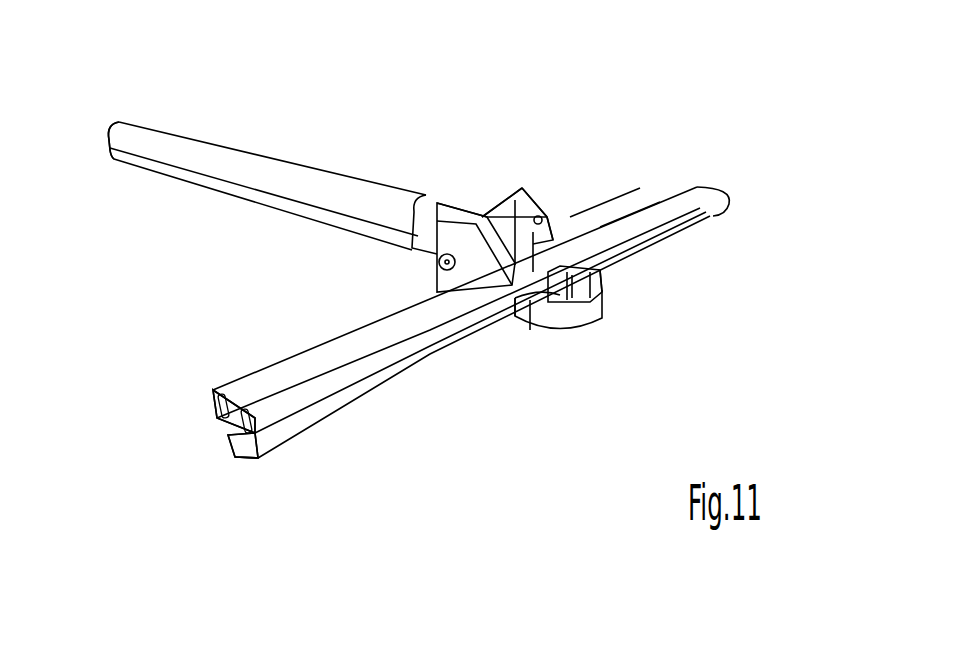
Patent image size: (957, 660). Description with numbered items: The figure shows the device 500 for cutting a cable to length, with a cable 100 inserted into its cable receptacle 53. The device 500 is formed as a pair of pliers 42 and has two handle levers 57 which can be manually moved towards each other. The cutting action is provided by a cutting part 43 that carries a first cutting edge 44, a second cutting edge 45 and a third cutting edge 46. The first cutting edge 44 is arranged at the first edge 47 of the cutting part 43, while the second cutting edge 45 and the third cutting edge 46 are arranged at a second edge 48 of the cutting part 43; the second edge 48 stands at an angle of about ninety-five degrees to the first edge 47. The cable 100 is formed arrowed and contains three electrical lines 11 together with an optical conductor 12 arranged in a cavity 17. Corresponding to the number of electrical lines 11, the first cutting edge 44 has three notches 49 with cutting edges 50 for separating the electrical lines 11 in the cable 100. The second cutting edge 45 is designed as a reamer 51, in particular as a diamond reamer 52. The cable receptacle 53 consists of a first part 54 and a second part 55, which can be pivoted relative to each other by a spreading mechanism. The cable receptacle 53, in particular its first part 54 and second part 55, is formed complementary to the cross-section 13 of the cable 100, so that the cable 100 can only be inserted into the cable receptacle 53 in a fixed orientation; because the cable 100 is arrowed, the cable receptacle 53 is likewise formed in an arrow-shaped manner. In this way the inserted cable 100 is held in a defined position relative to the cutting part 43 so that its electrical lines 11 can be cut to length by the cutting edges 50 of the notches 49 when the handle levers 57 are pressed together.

The device 500 is at (770, 67).
The pair of pliers 42 is at (340, 172).
The cable 100 is at (713, 217).
The handle levers 57 is at (203, 186).
The cutting part 43 is at (507, 197).
The first cutting edge 44 is at (545, 312).
The second cutting edge 45 is at (558, 215).
The third cutting edge 46 is at (538, 203).
The first edge 47 is at (518, 302).
The second edge 48 is at (553, 190).
The notches 49 is at (513, 197).
The cutting edges 50 is at (497, 203).
The reamer 51 is at (560, 203).
The diamond reamer 52 is at (603, 173).
The cable receptacle 53 is at (613, 277).
The first part 54 is at (532, 308).
The second part 55 is at (602, 295).
The electrical lines 11 is at (220, 393).
The optical conductor 12 is at (237, 458).
The cross-section 13 is at (227, 434).
The cavity 17 is at (258, 460).